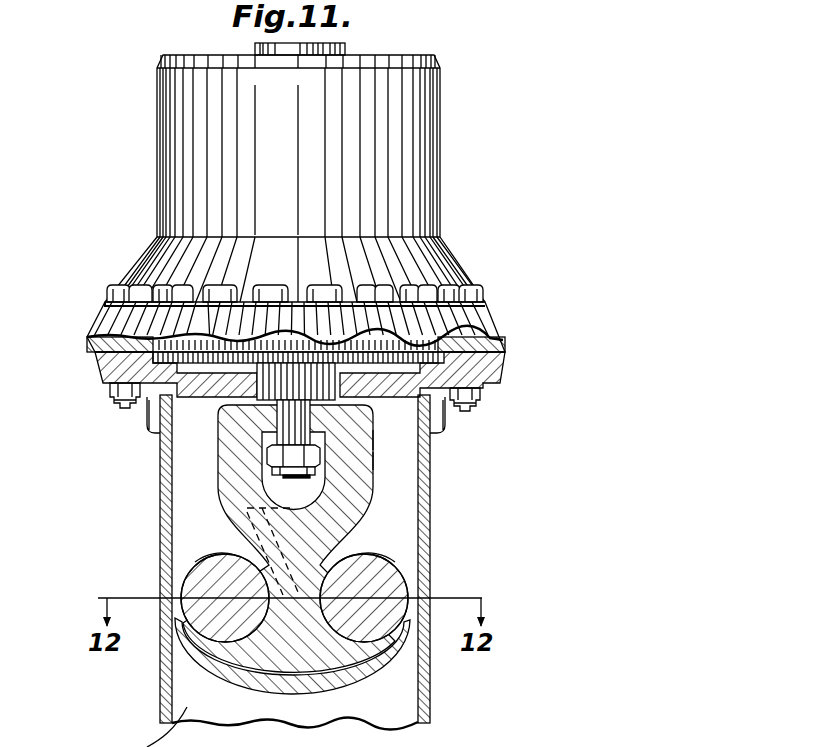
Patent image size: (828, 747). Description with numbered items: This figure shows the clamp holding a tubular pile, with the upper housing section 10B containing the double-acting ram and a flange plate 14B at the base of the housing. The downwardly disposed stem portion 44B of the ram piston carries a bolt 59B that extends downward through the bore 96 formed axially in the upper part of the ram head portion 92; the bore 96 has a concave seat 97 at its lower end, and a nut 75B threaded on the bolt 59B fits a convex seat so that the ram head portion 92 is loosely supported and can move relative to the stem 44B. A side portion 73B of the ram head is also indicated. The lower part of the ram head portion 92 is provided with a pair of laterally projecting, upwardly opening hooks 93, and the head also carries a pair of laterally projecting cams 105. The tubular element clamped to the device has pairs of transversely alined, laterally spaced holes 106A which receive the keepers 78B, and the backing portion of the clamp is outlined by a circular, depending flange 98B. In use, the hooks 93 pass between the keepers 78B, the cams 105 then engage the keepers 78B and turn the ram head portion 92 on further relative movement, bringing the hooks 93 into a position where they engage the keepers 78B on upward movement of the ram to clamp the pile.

The upper housing section 10B is at (427, 168).
The flange plate 14B is at (498, 328).
The circular depending flange 98B is at (147, 420).
The stem portion 44B is at (273, 378).
The bolt 59B is at (293, 408).
The support body side 73B is at (367, 438).
The nut 75B is at (293, 457).
The concave seat 97 is at (281, 488).
The cams 105 is at (255, 527).
The ram head portion 92 is at (379, 487).
The bore 96 is at (373, 458).
The holes 106A is at (213, 562).
The keepers 78B is at (202, 573).
The hooks 93 is at (193, 640).